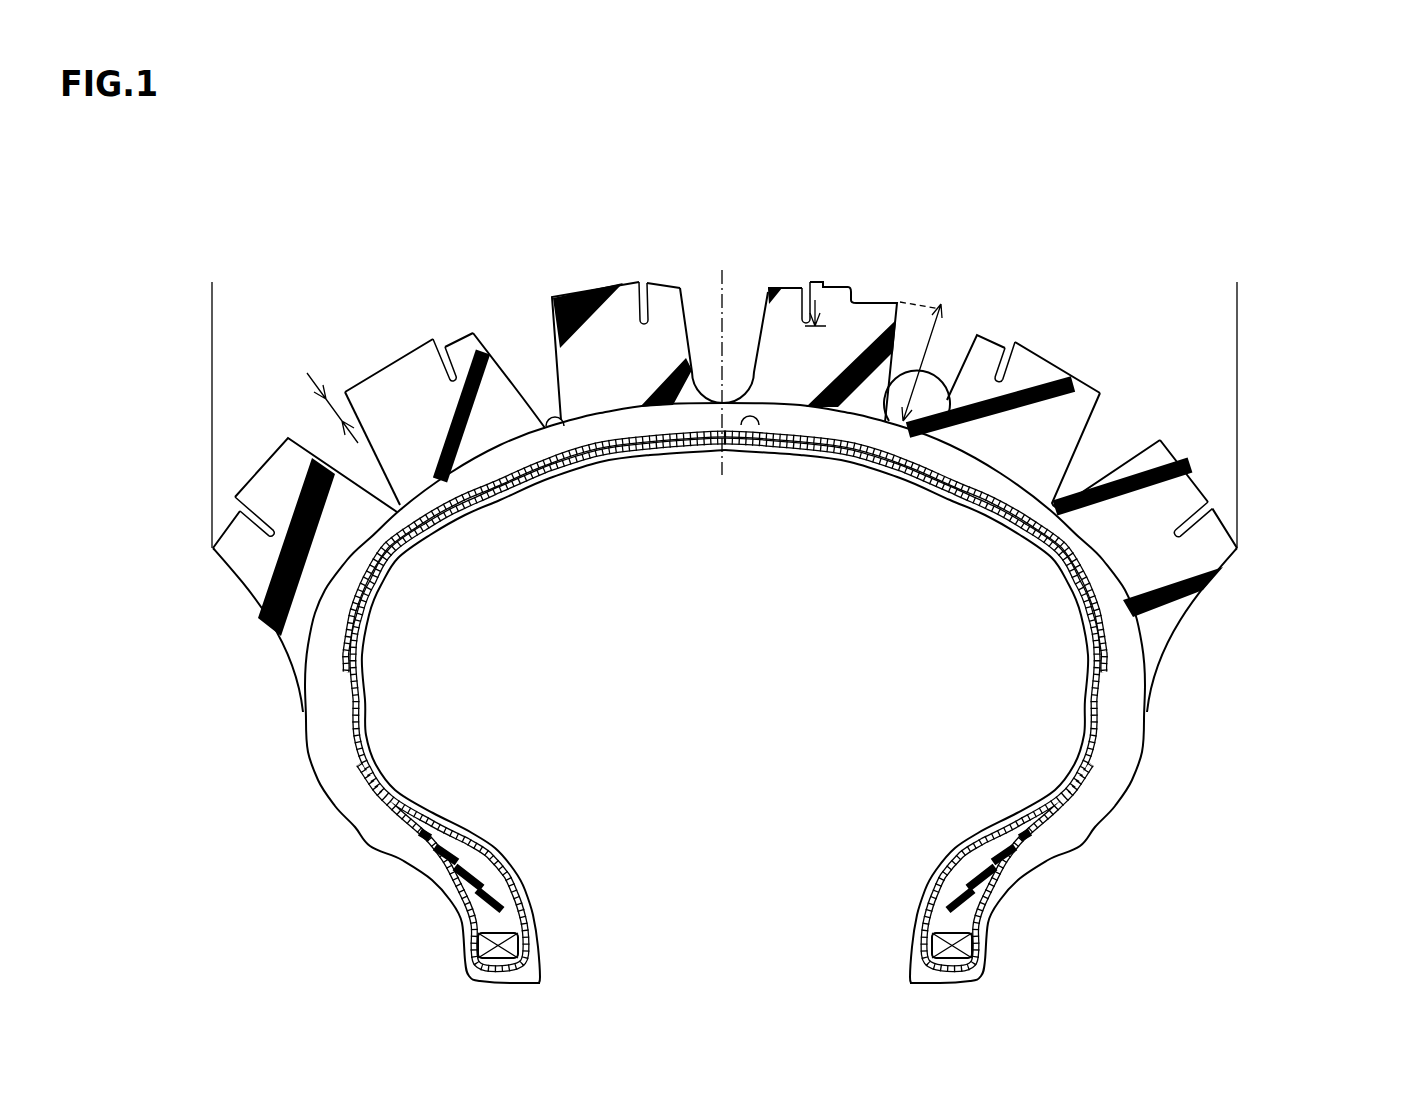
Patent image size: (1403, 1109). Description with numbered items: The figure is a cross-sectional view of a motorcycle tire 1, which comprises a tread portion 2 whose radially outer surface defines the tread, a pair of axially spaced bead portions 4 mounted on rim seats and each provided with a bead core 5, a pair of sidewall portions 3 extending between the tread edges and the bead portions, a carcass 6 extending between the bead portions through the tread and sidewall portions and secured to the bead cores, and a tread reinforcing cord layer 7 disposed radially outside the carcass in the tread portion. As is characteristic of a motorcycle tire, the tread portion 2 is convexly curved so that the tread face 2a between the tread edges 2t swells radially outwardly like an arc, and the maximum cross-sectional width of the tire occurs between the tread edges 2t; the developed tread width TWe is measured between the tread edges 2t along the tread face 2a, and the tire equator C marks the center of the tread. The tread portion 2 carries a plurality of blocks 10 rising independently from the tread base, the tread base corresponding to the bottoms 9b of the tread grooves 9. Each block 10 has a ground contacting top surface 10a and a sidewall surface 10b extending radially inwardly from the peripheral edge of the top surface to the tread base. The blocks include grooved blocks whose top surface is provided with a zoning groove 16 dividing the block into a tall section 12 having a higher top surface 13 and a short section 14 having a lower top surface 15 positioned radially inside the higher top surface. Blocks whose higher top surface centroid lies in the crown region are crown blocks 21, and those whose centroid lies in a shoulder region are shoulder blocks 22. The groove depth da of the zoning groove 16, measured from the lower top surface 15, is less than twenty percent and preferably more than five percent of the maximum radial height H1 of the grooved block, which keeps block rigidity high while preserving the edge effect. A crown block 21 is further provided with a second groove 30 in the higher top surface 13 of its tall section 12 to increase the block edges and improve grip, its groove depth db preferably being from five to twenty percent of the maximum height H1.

The tire 1 is at (1288, 242).
The tread portion 2 is at (910, 250).
The tread face 2a is at (1190, 440).
The tread edge 2t is at (1237, 548).
The sidewall portion 3 is at (1157, 733).
The bead portion 4 is at (905, 933).
The bead core 5 is at (963, 950).
The carcass 6 is at (1100, 740).
The tread reinforcing cord layer 7 is at (757, 431).
The tread groove 9 is at (1108, 445).
The groove bottom 9b is at (570, 430).
The block 10 is at (258, 418).
The top surface of block 10a is at (447, 355).
The sidewall surface of block 10b is at (372, 458).
The tall section 12 is at (846, 286).
The higher top surface 13 is at (1063, 345).
The short section 14 is at (819, 282).
The lower top surface 15 is at (1000, 346).
The zoning groove 16 is at (452, 382).
The crown block 21 is at (363, 302).
The shoulder block 22 is at (1210, 473).
The second groove 30 is at (372, 381).
The tire equator C is at (722, 356).
The developed tread width TWe is at (212, 282).
The groove depth of zoning groove da is at (816, 335).
The groove depth of second groove db is at (330, 412).
The maximum radial height of grooved block H1 is at (903, 421).